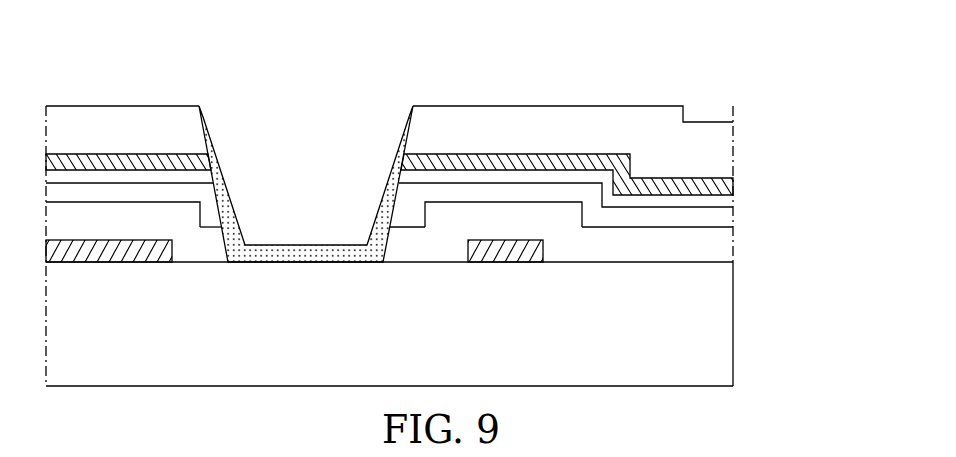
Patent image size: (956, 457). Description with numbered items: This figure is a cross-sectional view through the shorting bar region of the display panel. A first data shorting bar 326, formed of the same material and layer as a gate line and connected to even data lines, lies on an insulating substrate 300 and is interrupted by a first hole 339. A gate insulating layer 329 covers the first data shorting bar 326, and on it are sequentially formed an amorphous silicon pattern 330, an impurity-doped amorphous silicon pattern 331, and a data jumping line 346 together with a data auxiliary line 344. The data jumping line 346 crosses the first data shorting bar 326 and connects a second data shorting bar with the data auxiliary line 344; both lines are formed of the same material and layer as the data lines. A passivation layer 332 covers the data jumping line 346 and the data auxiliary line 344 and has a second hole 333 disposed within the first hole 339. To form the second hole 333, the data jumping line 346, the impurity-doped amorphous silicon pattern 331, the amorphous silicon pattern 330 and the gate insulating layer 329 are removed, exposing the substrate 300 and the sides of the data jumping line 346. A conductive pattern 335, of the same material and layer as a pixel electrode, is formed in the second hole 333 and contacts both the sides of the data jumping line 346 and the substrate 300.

The insulating substrate 300 is at (427, 357).
The first data shorting bar 326 is at (125, 263).
The gate insulating layer 329 is at (725, 247).
The amorphous silicon pattern 330 is at (540, 197).
The impurity-doped amorphous silicon pattern 331 is at (515, 178).
The passivation layer 332 is at (468, 117).
The second hole 333 is at (301, 185).
The conductive pattern 335 is at (223, 177).
The first hole 339 is at (468, 286).
The data auxiliary line 344 is at (727, 188).
The data jumping line 346 is at (98, 153).